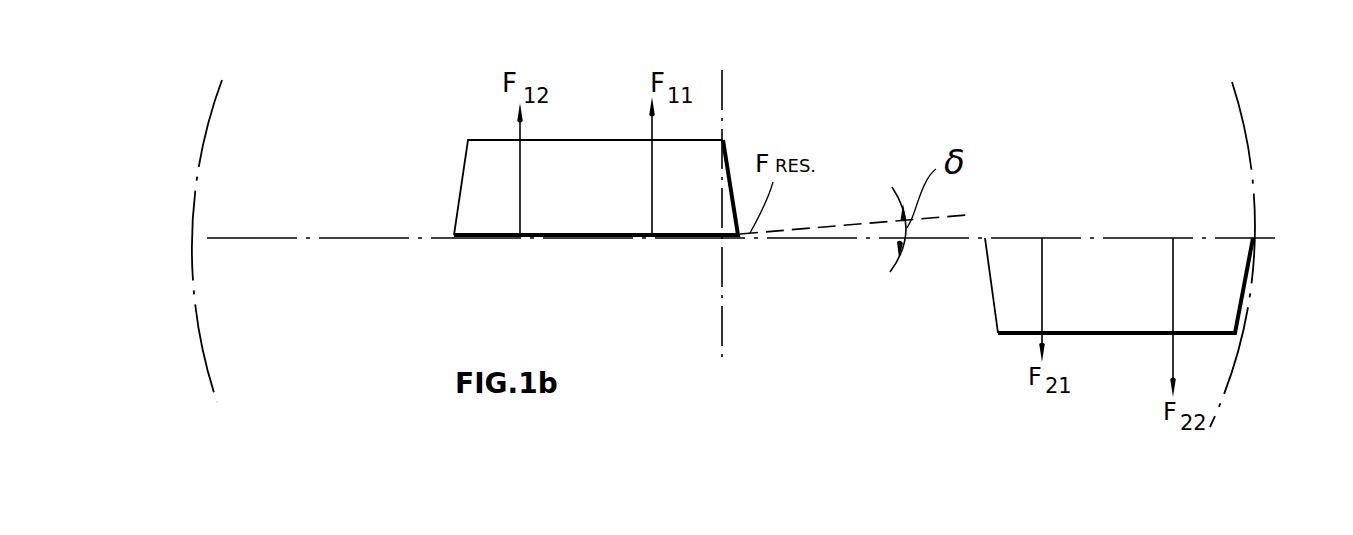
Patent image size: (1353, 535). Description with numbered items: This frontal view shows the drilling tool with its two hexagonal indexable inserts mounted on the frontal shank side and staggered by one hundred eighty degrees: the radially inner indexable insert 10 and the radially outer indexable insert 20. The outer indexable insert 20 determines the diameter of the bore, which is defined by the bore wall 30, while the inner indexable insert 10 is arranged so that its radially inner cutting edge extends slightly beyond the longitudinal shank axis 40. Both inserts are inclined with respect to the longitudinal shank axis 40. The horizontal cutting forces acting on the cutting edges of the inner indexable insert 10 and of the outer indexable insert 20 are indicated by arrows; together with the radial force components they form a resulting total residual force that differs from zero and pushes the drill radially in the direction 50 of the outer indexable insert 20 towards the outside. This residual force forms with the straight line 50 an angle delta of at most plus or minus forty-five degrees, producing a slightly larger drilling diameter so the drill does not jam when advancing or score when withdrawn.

The radially inner indexable insert 10 is at (586, 212).
The radially outer indexable insert 20 is at (1132, 257).
The bore wall 30 is at (1245, 121).
The longitudinal shank axis 40 is at (723, 115).
The direction (straight line) toward the outer insert 50 is at (974, 240).